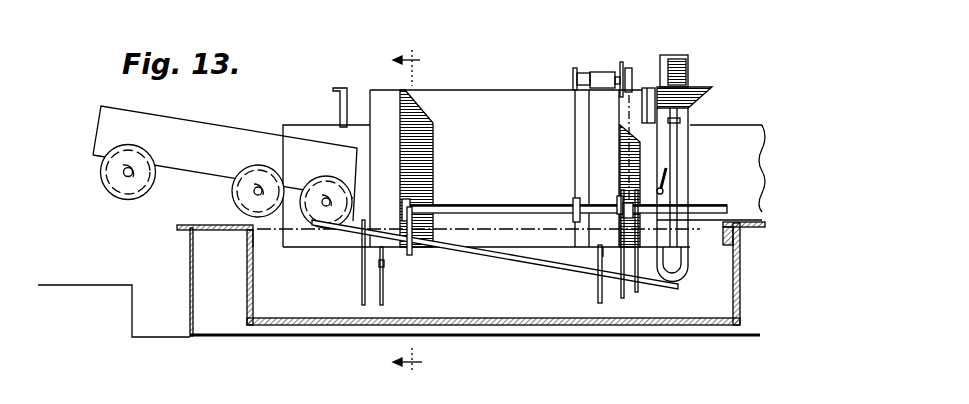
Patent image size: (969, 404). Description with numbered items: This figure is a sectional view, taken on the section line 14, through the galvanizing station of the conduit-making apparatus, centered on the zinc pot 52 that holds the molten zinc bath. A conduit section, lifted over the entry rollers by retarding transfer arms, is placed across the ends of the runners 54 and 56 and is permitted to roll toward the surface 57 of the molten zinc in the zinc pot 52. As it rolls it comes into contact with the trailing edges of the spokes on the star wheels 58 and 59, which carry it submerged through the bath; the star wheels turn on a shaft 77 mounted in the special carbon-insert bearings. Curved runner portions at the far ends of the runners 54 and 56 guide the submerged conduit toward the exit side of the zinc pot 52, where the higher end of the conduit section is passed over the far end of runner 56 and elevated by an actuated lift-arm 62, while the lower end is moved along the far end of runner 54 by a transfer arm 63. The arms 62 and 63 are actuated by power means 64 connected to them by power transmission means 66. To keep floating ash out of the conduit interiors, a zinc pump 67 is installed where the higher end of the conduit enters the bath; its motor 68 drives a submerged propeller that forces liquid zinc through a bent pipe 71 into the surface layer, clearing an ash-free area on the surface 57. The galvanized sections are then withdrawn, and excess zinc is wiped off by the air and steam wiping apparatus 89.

The section line 14- 14 is at (426, 214).
The zinc pot 52 is at (540, 324).
The runner 54 is at (622, 299).
The runner 56 is at (362, 287).
The surface of the molten zinc 57 is at (517, 228).
The star wheel 58 is at (596, 298).
The star wheel 59 is at (385, 292).
The lift-arm 62 is at (410, 256).
The transfer arm 63 is at (637, 292).
The power means 64 is at (600, 70).
The power transmission means 66 is at (573, 136).
The zinc pump 67 is at (688, 263).
The motor 68 is at (688, 60).
The bent pipe 71 is at (682, 282).
The shaft 77 is at (476, 201).
The air and steam wiping apparatus 89 is at (92, 157).